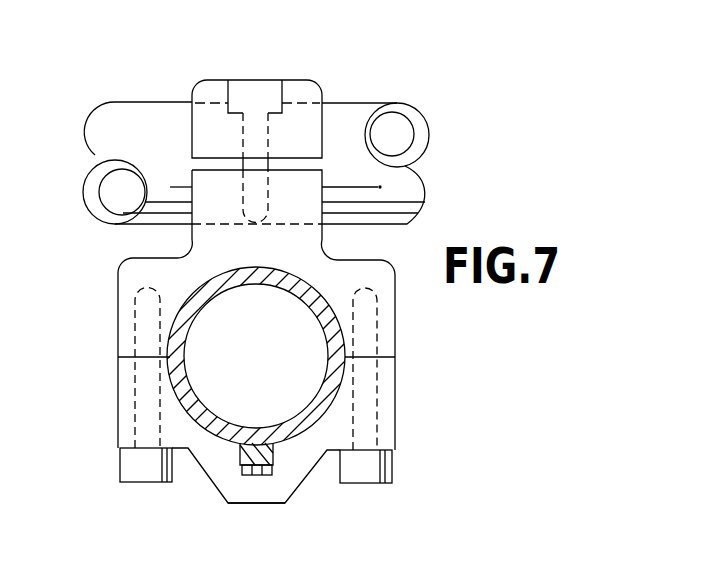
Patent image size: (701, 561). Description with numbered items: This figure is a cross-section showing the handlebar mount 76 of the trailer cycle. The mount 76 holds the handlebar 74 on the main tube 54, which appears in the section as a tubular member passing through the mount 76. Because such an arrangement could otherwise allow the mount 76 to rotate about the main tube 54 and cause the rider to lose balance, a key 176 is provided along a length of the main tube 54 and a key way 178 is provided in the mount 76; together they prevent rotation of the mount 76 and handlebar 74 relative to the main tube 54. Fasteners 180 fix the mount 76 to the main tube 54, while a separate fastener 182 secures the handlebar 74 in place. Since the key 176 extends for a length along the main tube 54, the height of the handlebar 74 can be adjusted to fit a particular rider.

The main tube 54 is at (184, 355).
The handlebar 74 is at (371, 101).
The handlebar mount 76 is at (402, 396).
The key 176 is at (231, 504).
The key way 178 is at (280, 458).
The fasteners 180 is at (120, 460).
The fastener 182 is at (276, 92).